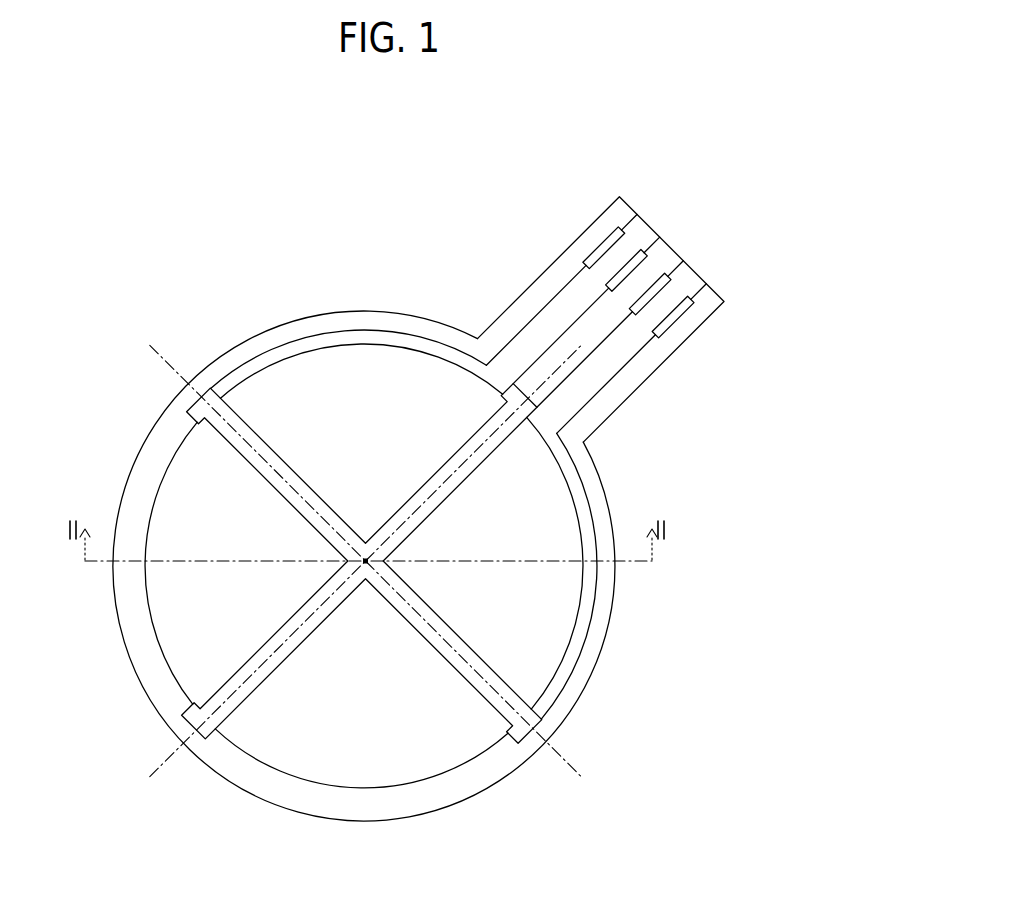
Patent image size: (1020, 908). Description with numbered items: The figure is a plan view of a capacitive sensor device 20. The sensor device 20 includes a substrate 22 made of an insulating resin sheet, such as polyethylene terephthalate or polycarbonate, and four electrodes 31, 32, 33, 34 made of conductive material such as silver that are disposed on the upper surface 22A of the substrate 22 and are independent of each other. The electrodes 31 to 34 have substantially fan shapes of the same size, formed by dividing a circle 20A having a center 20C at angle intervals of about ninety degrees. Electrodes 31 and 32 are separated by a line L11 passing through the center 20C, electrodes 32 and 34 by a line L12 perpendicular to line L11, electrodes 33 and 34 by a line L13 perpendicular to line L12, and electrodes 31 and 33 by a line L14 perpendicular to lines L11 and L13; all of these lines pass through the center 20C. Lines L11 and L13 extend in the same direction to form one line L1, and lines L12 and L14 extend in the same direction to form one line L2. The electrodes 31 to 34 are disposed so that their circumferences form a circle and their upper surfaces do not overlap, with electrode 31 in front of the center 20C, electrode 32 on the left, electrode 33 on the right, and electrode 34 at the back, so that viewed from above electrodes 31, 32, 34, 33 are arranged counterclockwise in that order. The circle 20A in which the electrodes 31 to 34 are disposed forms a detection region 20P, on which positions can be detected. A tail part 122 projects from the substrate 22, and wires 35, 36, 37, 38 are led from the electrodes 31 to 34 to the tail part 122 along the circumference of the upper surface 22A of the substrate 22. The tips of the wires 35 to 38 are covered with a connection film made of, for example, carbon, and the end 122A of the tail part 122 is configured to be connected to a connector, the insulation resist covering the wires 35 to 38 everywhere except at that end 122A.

The sensor device 20 is at (416, 190).
The circle 20A is at (218, 700).
The center 20C is at (366, 564).
The detection region 20P is at (293, 573).
The substrate 22 is at (246, 775).
The upper surface of substrate 22A is at (150, 662).
The electrode 31 is at (360, 390).
The electrode 32 is at (207, 462).
The electrode 33 is at (548, 627).
The electrode 34 is at (388, 745).
The wire 35 is at (533, 363).
The wire 36 is at (243, 362).
The wire 37 is at (573, 383).
The wire 38 is at (575, 675).
The tail part 122 is at (527, 288).
The end of tail part 122A is at (614, 192).
The line L1 is at (372, 533).
The line L2 is at (398, 584).
The line L11 is at (152, 347).
The line L12 is at (158, 781).
The line L13 is at (563, 757).
The line L14 is at (583, 446).